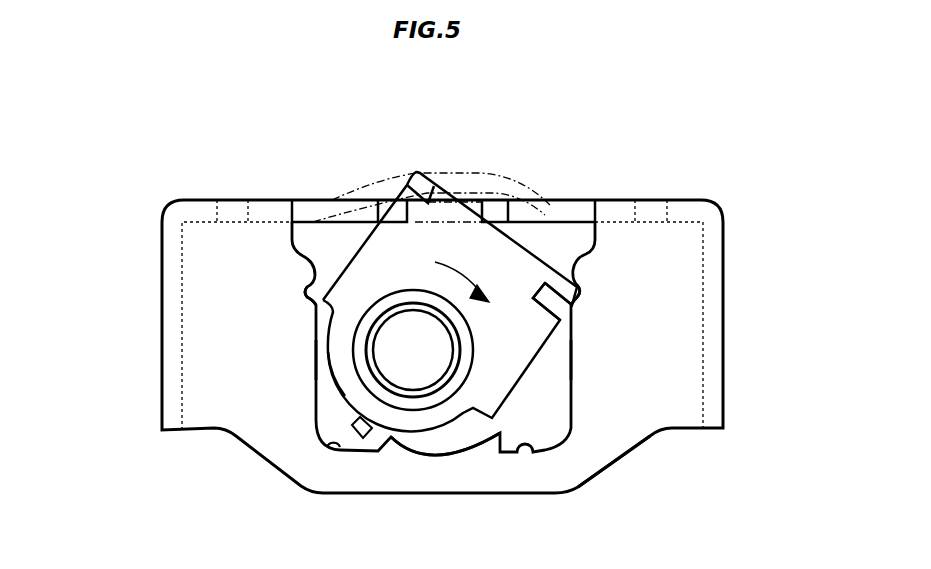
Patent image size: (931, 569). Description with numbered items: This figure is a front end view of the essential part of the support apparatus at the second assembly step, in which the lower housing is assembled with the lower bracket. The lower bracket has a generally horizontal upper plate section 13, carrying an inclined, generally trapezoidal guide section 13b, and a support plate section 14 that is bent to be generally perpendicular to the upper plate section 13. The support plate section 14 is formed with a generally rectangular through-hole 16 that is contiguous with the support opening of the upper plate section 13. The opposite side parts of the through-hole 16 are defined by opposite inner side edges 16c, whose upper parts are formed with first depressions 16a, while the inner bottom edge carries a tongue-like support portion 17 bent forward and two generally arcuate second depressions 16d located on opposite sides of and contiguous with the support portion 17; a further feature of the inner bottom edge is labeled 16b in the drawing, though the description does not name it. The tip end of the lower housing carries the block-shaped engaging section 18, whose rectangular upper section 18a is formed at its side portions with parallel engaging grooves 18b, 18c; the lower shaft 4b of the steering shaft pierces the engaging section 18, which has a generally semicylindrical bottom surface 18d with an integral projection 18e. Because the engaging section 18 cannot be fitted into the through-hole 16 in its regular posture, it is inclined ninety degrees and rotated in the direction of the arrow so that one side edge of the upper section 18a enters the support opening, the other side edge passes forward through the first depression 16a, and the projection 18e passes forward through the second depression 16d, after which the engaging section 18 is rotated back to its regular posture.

The lower shaft 4b is at (412, 385).
The upper plate section 13 is at (588, 200).
The guide section 13b is at (461, 173).
The support plate section 14 is at (607, 448).
The through-hole 16 is at (565, 392).
The first depression 16a is at (315, 303).
The floor projection 16b is at (518, 452).
The inner side edge 16c is at (573, 368).
The second depression 16d is at (340, 448).
The support portion 17 is at (437, 456).
The engaging section 18 is at (530, 372).
The upper section 18a is at (512, 267).
The engaging groove 18b is at (567, 310).
The engaging groove 18c is at (417, 207).
The bottom surface 18d is at (331, 372).
The projection 18e is at (354, 432).